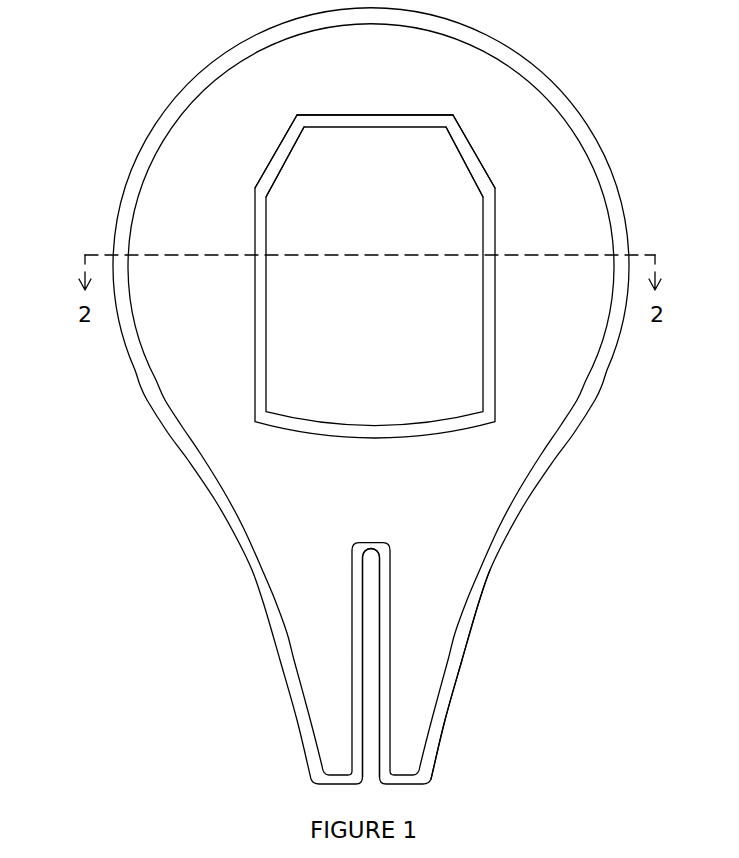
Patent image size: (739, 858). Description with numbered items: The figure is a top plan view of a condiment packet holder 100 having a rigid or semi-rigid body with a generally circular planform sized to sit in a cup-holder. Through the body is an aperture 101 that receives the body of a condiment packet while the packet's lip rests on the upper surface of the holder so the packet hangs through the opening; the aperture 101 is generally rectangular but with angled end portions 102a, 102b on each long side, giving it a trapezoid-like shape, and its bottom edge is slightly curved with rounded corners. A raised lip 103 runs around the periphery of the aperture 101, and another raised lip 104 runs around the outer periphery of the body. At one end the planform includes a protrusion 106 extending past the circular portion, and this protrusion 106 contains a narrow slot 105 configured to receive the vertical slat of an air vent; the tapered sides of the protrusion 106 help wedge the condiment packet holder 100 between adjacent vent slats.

The condiment packet holder 100 is at (74, 557).
The aperture 101 is at (397, 327).
The left chamfered corner 102a is at (288, 152).
The right chamfered corner 102b is at (457, 153).
The raised lip 103 is at (370, 113).
The raised lip 104 is at (138, 383).
The slot 105 is at (372, 557).
The protrusion 106 is at (467, 650).